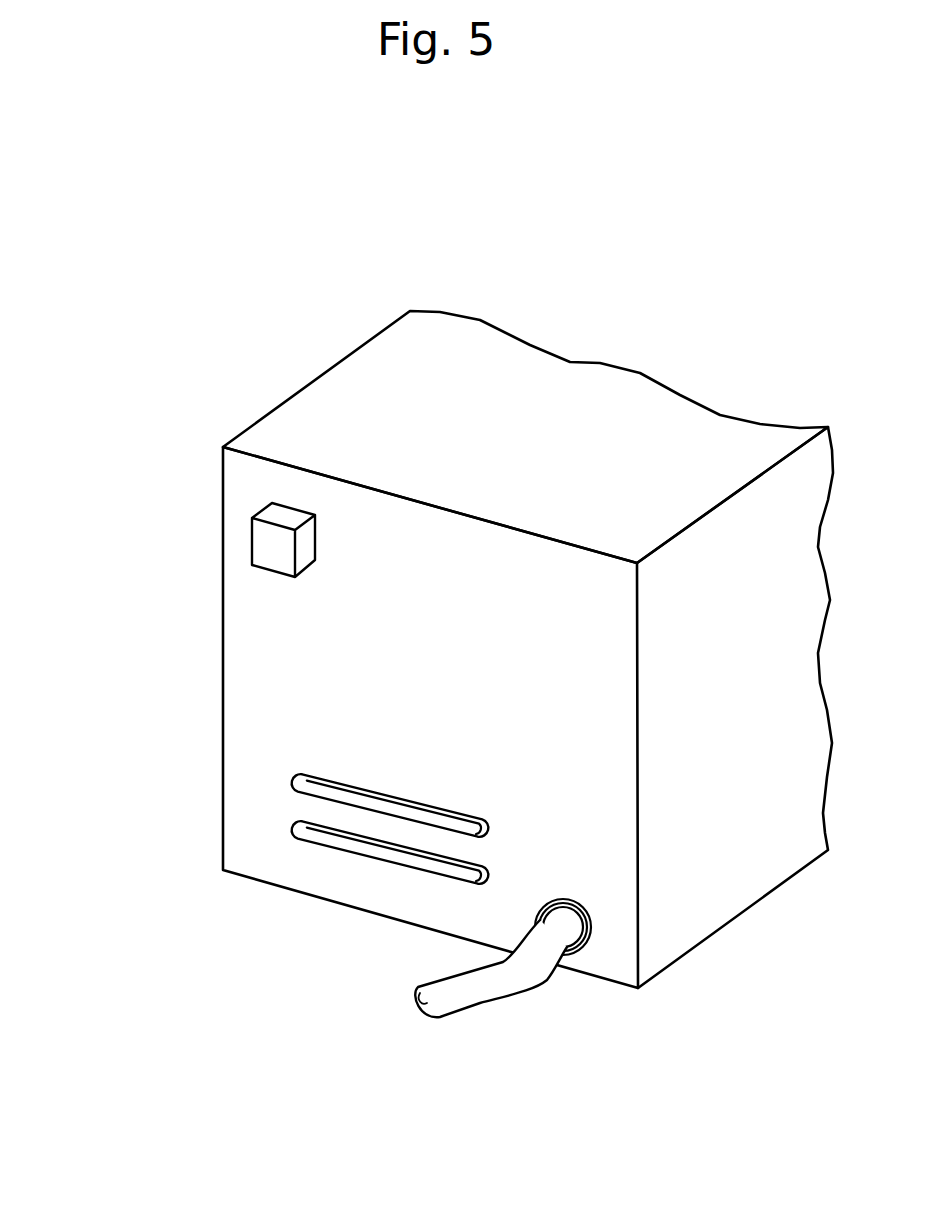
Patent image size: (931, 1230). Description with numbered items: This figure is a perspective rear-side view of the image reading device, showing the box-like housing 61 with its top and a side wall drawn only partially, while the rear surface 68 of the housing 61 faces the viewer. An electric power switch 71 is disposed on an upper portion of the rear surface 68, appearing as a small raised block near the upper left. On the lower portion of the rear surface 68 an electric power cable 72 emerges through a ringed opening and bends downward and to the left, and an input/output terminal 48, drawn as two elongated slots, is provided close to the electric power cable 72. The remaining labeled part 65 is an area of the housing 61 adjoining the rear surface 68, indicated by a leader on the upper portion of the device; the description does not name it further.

The housing 61 is at (456, 655).
The top wall of housing 65 is at (380, 375).
The rear surface 68 is at (255, 668).
The electric power switch 71 is at (270, 545).
The input/output terminal 48 is at (325, 793).
The electric power cable 72 is at (465, 990).